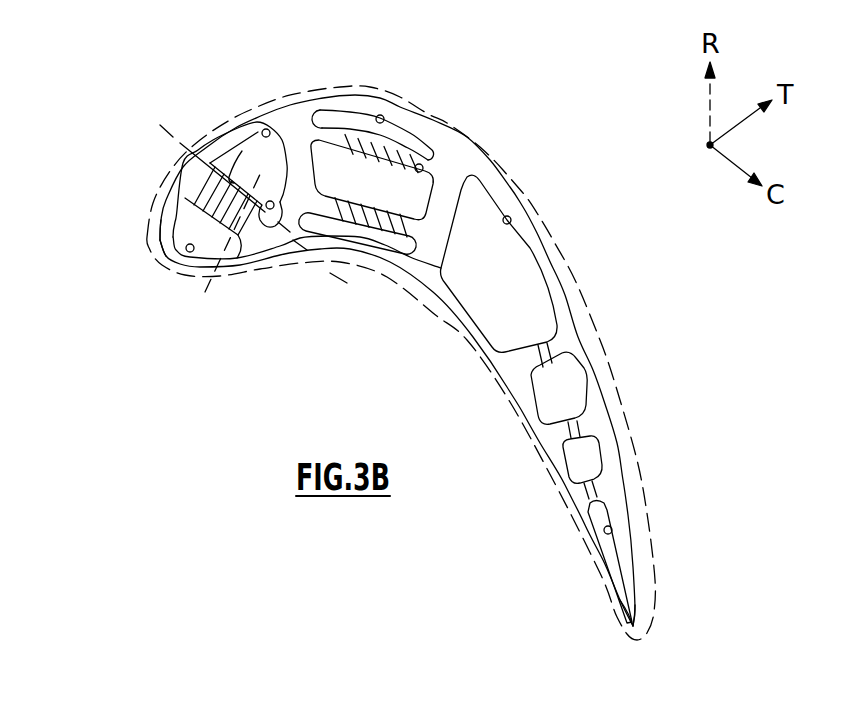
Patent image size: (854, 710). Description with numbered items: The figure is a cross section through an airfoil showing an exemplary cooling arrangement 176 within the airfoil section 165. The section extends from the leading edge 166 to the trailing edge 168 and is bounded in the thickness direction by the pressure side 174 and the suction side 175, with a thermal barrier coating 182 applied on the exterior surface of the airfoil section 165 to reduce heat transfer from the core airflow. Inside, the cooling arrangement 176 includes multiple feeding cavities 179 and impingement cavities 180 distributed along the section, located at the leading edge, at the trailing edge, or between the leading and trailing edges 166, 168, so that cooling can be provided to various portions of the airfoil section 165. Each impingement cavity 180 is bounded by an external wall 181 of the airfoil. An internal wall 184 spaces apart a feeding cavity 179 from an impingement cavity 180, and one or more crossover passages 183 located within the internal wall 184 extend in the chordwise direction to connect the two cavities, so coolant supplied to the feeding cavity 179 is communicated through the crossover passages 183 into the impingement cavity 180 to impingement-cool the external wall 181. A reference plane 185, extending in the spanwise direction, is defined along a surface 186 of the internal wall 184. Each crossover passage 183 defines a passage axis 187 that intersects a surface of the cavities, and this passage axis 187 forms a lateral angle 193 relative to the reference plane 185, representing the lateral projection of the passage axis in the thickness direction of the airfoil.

The airfoil section 165 is at (384, 272).
The leading edge 166 is at (158, 252).
The trailing edge 168 is at (630, 636).
The pressure side 174 is at (470, 343).
The suction side 175 is at (563, 277).
The cooling arrangement 176 is at (346, 313).
The feeding cavity 179 is at (267, 129).
The impingement cavity 180 is at (195, 253).
The external wall 181 is at (160, 231).
The thermal barrier coating 182 is at (600, 343).
The crossover passage 183 is at (600, 483).
The internal wall 184 is at (184, 180).
The reference plane 185 is at (167, 123).
The surface of the internal wall 186 is at (312, 259).
The passage axis 187 is at (216, 292).
The lateral angle 193 is at (264, 228).